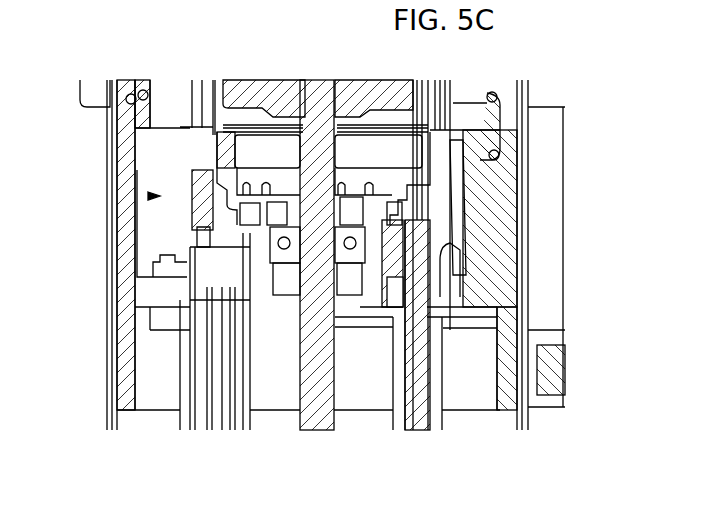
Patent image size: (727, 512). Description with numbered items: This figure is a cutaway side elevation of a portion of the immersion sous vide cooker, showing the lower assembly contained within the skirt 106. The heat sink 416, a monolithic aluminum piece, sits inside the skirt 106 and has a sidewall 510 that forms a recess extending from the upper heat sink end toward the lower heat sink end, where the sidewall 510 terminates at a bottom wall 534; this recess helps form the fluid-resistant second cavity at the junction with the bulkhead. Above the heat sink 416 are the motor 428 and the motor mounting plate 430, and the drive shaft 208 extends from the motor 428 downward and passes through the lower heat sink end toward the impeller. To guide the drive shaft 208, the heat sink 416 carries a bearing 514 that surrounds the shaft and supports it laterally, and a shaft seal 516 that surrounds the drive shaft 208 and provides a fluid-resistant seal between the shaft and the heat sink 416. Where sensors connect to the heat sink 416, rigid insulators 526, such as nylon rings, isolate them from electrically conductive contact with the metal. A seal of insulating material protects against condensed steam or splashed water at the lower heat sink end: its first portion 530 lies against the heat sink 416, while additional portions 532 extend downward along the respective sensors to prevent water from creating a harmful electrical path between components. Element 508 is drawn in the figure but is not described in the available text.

The skirt 106 is at (108, 425).
The heat sink 416 is at (108, 302).
The sidewall 510 is at (152, 170).
The bearing carrier 508 is at (240, 235).
The bearing 514 is at (240, 240).
The bottom wall 534 is at (235, 262).
The shaft seal 516 is at (245, 272).
The motor 428 is at (288, 95).
The motor mounting plate 430 is at (345, 108).
The drive shaft 208 is at (307, 368).
The first portion 530 is at (370, 330).
The additional portions 532 is at (458, 387).
The rigid insulators 526 is at (447, 300).